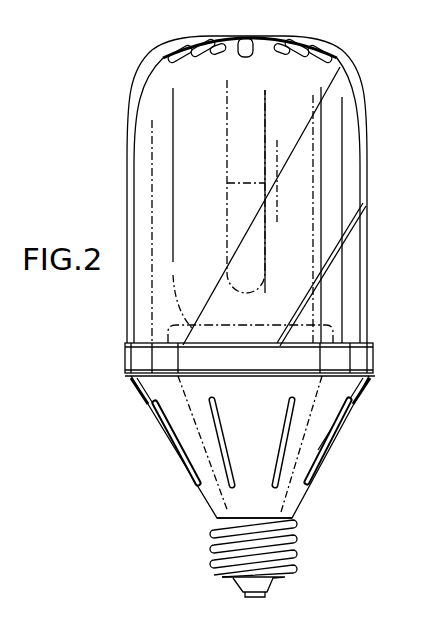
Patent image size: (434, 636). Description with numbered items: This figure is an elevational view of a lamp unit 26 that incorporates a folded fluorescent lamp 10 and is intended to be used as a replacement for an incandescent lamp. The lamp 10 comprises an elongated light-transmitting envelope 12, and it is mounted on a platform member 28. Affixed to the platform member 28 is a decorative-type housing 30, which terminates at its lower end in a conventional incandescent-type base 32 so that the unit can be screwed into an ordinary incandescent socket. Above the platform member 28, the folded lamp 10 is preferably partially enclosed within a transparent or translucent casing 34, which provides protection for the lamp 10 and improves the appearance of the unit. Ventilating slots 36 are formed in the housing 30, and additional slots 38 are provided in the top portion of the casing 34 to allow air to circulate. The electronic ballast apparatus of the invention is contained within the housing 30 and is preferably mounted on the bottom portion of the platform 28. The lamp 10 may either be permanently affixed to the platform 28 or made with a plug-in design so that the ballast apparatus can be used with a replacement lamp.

The lamp 10 is at (254, 116).
The light-transmitting envelope 12 is at (263, 160).
The lamp unit 26 is at (403, 202).
The platform member 28 is at (377, 350).
The housing 30 is at (352, 390).
The incandescent-type base 32 is at (295, 538).
The casing 34 is at (367, 137).
The ventilating slots 36 is at (330, 442).
The additional slots 38 is at (310, 42).